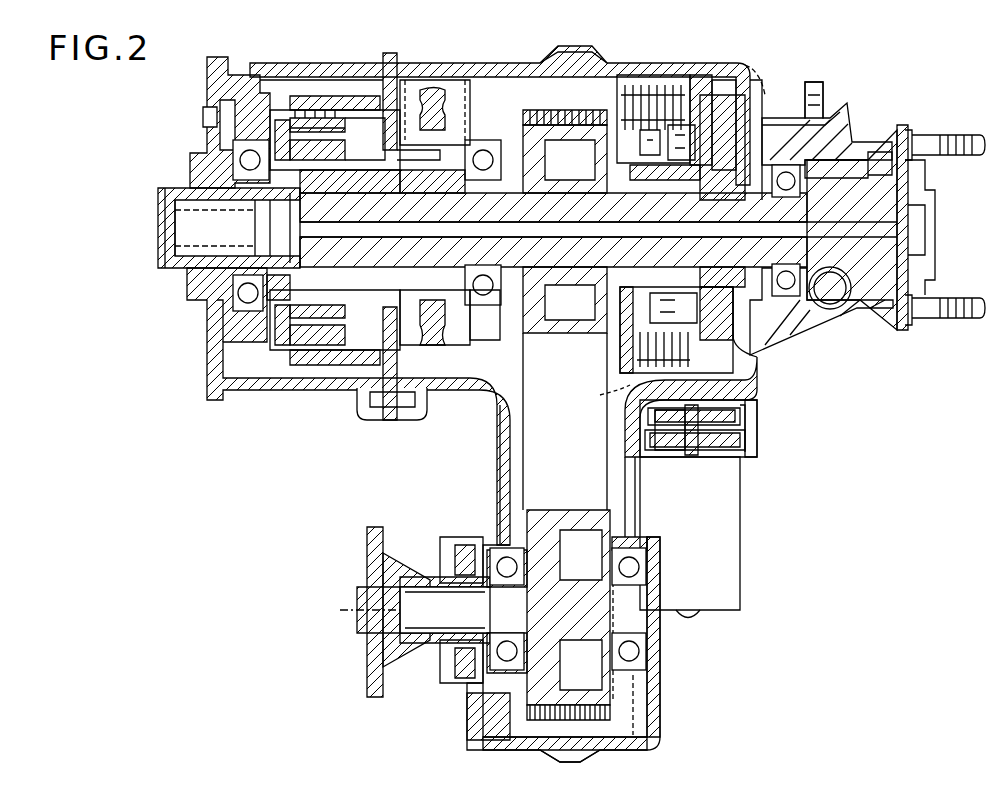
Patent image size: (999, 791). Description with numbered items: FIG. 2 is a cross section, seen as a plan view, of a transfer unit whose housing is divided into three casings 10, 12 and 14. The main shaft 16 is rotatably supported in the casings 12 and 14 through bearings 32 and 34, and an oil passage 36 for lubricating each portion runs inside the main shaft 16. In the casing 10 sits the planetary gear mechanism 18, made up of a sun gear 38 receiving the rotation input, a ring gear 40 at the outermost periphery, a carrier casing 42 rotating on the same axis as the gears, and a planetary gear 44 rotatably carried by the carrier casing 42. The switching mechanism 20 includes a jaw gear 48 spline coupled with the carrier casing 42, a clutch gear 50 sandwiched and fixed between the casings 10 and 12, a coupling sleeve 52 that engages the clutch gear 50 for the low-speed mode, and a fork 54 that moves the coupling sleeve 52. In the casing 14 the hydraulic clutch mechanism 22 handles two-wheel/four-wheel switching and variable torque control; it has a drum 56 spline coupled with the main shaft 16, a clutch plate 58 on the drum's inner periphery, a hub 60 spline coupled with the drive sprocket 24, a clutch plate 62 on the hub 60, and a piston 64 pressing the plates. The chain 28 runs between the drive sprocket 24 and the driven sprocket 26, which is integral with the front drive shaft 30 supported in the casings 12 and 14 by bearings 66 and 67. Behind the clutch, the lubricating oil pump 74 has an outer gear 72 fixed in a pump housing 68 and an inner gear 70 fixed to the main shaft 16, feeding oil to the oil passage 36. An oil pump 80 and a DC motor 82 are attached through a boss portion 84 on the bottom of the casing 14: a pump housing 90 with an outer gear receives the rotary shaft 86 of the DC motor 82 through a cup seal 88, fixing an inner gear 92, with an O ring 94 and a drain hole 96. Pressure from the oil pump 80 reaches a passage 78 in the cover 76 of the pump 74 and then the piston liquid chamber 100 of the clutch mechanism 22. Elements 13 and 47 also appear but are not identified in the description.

The casing 10 is at (325, 68).
The casing 12 is at (420, 408).
The spacer 13 is at (420, 185).
The casing 14 is at (790, 322).
The main shaft 16 is at (531, 217).
The planetary gear mechanism 18 is at (263, 364).
The switching mechanism 20 is at (415, 340).
The hydraulic clutch mechanism 22 is at (738, 95).
The drive sprocket 24 is at (580, 376).
The driven sprocket 26 is at (540, 512).
The chain 28 is at (530, 112).
The front drive shaft 30 is at (430, 590).
The bearing 32 is at (495, 252).
The bearing 34 is at (812, 185).
The oil passage 36 is at (376, 226).
The sun gear 38 is at (303, 340).
The ring gear 40 is at (318, 365).
The carrier casing 42 is at (335, 185).
The planetary gear 44 is at (285, 100).
The chain guide 47 is at (599, 397).
The jaw gear 48 is at (445, 182).
The clutch gear 50 is at (383, 68).
The coupling sleeve 52 is at (452, 335).
The fork 54 is at (437, 88).
The drum 56 is at (633, 78).
The clutch plate 58 is at (700, 80).
The hub 60 is at (645, 180).
The clutch plate 62 is at (722, 82).
The piston 64 is at (760, 357).
The bearing 66 is at (492, 548).
The bearing 67 is at (662, 665).
The pump housing 68 is at (800, 96).
The inner gear 70 is at (760, 185).
The outer gear 72 is at (836, 151).
The lubricating oil pump 74 is at (817, 312).
The cover 76 is at (775, 90).
The passage 78 is at (700, 180).
The oil pump 80 is at (748, 450).
The DC motor 82 is at (724, 537).
The boss portion 84 is at (750, 390).
The rotary shaft 86 is at (685, 452).
The cup seal 88 is at (703, 455).
The pump housing 90 is at (748, 432).
The inner gear 92 is at (791, 426).
The O ring 94 is at (745, 410).
The drain hole 96 is at (547, 475).
The piston liquid chamber 100 is at (710, 290).